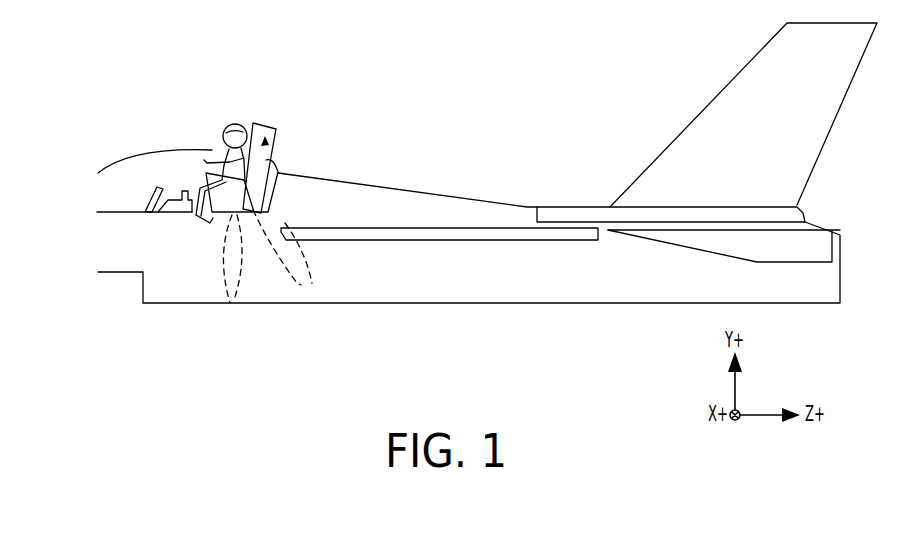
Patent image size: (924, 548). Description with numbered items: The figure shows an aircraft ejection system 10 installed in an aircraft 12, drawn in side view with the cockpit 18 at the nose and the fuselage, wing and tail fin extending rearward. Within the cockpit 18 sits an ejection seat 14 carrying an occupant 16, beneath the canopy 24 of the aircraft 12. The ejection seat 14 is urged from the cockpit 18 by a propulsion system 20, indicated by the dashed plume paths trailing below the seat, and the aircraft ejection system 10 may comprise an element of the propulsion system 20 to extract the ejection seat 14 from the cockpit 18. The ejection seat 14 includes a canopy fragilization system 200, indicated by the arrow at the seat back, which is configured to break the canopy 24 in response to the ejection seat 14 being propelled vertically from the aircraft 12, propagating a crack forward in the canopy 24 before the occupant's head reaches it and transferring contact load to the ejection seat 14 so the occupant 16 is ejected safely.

The aircraft ejection system 10 is at (487, 163).
The aircraft 12 is at (501, 282).
The ejection seat 14 is at (278, 133).
The occupant 16 is at (232, 126).
The cockpit 18 is at (131, 196).
The propulsion system 20 is at (228, 258).
The canopy 24 is at (165, 152).
The canopy fragilization system 200 is at (263, 165).